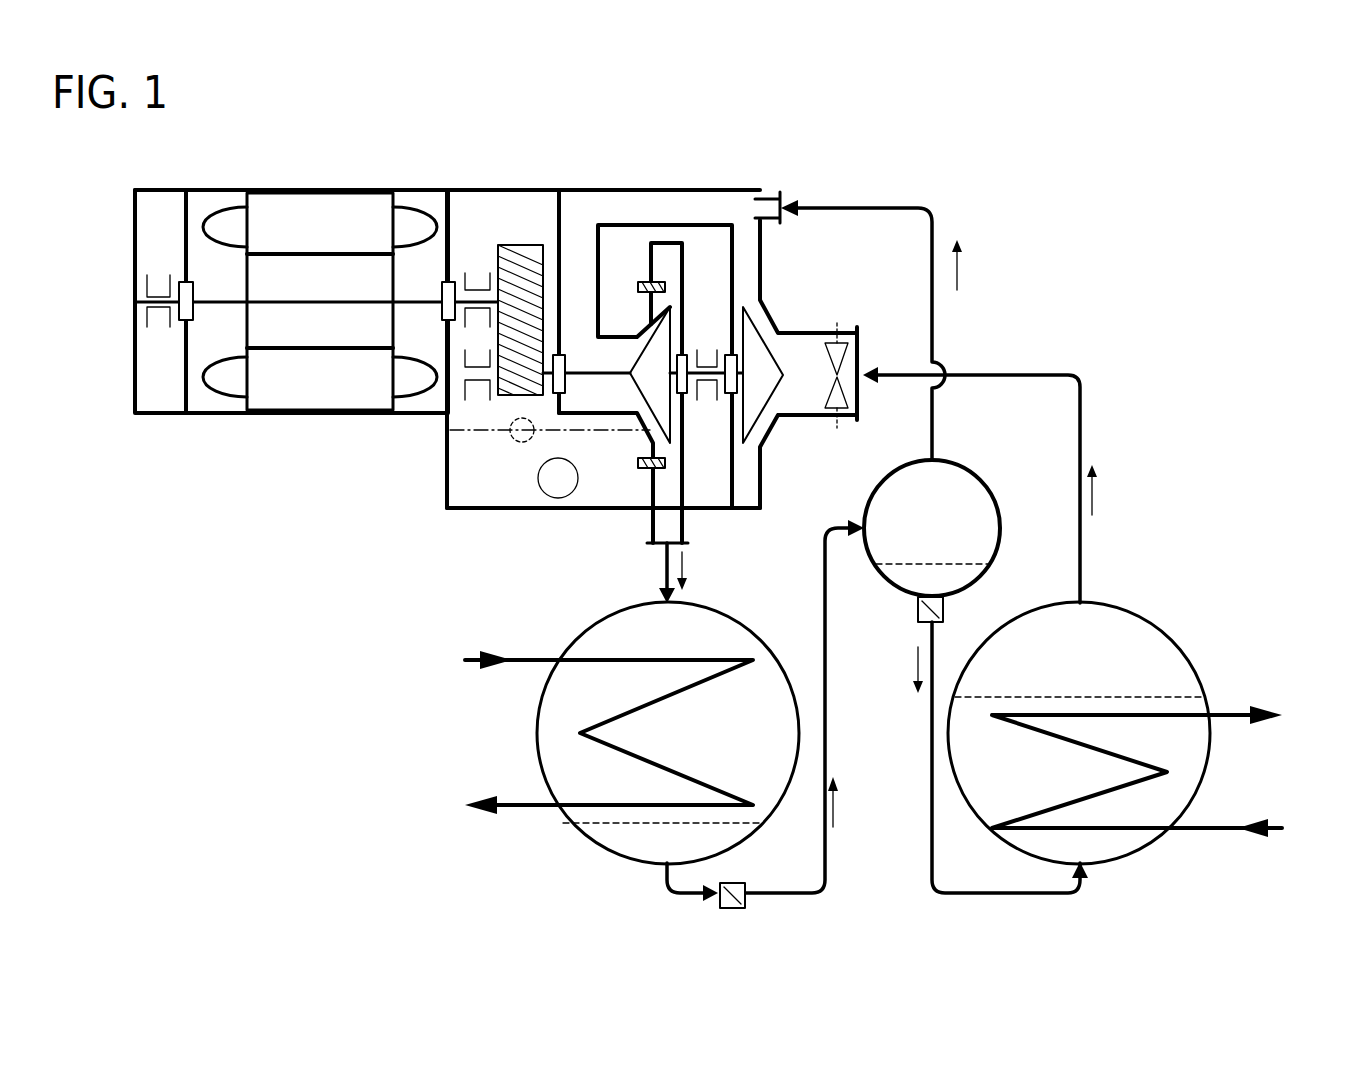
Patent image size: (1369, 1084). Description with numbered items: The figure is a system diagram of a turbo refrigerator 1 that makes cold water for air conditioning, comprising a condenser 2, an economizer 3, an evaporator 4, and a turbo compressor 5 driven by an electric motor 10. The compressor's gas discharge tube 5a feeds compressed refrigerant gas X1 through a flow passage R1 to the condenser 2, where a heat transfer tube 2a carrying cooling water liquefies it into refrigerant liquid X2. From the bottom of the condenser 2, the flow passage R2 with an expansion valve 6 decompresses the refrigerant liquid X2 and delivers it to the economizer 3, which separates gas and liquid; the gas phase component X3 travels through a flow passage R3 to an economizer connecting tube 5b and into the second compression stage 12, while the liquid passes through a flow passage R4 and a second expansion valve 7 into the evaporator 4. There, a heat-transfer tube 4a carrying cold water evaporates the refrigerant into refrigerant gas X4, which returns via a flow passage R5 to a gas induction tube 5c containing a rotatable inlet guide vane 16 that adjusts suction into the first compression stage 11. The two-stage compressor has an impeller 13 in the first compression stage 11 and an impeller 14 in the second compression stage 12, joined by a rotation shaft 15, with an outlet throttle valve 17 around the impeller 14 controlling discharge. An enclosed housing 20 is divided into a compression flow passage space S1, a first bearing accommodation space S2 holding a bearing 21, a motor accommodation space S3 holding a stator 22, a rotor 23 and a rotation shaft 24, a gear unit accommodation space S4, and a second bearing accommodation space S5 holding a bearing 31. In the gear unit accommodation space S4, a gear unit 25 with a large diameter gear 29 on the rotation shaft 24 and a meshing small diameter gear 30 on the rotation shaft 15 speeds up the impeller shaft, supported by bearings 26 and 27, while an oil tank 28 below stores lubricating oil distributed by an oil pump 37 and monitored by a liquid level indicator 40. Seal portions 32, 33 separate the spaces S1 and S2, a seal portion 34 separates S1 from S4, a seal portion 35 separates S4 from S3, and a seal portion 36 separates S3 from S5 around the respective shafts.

The turbo refrigerator 1 is at (1120, 290).
The condenser 2 is at (748, 625).
The heat transfer tube 2a is at (615, 658).
The economizer 3 is at (985, 490).
The evaporator 4 is at (1170, 622).
The heat-transfer tube 4a is at (1045, 700).
The turbo compressor 5 is at (770, 262).
The gas discharge tube 5a is at (688, 516).
The economizer connecting tube 5b is at (778, 198).
The gas induction tube 5c is at (808, 418).
The expansion valve 6 is at (742, 880).
The expansion valve 7 is at (917, 608).
The electric motor 10 is at (243, 190).
The first compression stage 11 is at (778, 320).
The second compression stage 12 is at (636, 321).
The impeller 13 is at (785, 362).
The impeller 14 is at (645, 358).
The rotation shaft 15 is at (705, 366).
The inlet guide vane 16 is at (842, 350).
The outlet throttle valve 17 is at (648, 282).
The housing 20 is at (524, 190).
The bearing 21 is at (706, 395).
The stator 22 is at (405, 200).
The rotor 23 is at (398, 278).
The rotation shaft 24 is at (225, 300).
The gear unit 25 is at (496, 241).
The bearing 26 is at (475, 276).
The bearing 27 is at (478, 403).
The oil tank 28 is at (592, 510).
The large diameter gear 29 is at (520, 245).
The small diameter gear 30 is at (510, 398).
The bearing 31 is at (158, 330).
The seal portion 32 is at (730, 353).
The seal portion 33 is at (687, 396).
The seal portion 34 is at (564, 362).
The seal portion 35 is at (444, 305).
The seal portion 36 is at (183, 293).
The oil pump 37 is at (578, 472).
The liquid level indicator 40 is at (520, 445).
The compression flow passage space S1 is at (673, 210).
The first bearing accommodation space S2 is at (703, 255).
The motor accommodation space S3 is at (218, 188).
The gear unit accommodation space S4 is at (533, 212).
The second bearing accommodation space S5 is at (158, 188).
The flow passage R1 is at (660, 570).
The flow passage R2 is at (828, 722).
The flow passage R3 is at (930, 285).
The flow passage R4 is at (932, 760).
The flow passage R5 is at (1078, 490).
The compressed refrigerant gas X1 is at (697, 571).
The refrigerant liquid X2 is at (875, 737).
The gas phase component X3 is at (971, 265).
The refrigerant gas X4 is at (1106, 490).